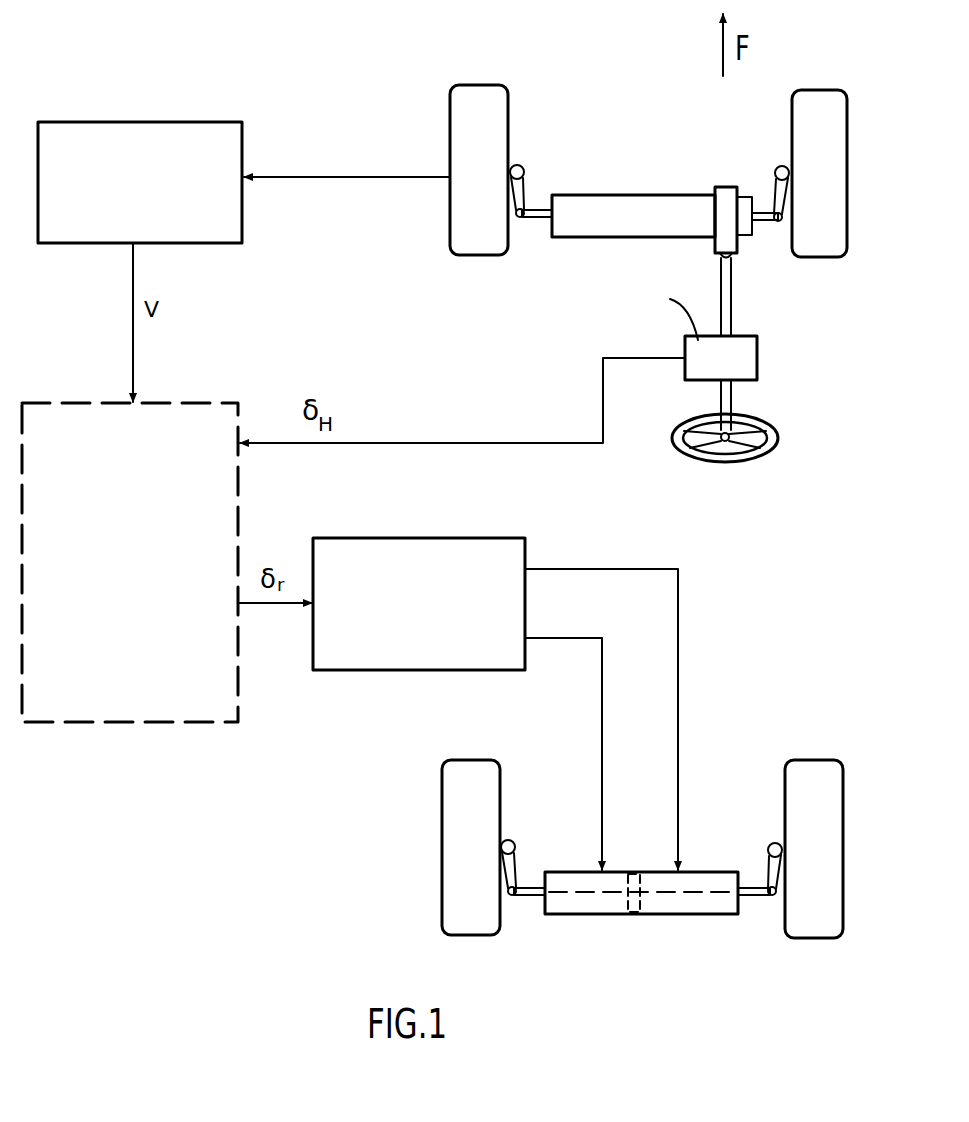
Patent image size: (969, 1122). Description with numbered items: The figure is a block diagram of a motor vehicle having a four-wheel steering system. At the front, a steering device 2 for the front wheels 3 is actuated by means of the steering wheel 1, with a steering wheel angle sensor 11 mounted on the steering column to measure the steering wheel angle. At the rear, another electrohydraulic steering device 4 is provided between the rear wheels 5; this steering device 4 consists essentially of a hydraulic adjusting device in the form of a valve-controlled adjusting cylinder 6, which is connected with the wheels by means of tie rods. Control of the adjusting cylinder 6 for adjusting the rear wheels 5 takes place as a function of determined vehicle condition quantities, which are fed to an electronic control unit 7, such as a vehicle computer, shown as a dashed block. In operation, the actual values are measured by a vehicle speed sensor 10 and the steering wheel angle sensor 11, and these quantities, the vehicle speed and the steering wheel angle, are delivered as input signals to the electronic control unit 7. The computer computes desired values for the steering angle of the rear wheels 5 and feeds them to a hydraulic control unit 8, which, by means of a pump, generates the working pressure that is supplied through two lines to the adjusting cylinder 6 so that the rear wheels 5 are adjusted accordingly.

The steering wheel 1 is at (725, 465).
The steering device 2 is at (652, 257).
The front wheels 3 is at (819, 139).
The electrohydraulic steering device 4 is at (641, 830).
The rear wheels 5 is at (814, 814).
The adjusting cylinder 6 is at (641, 931).
The electronic control unit 7 is at (130, 601).
The hydraulic control unit 8 is at (419, 570).
The vehicle speed sensor 10 is at (140, 152).
The steering wheel angle sensor 11 is at (691, 323).